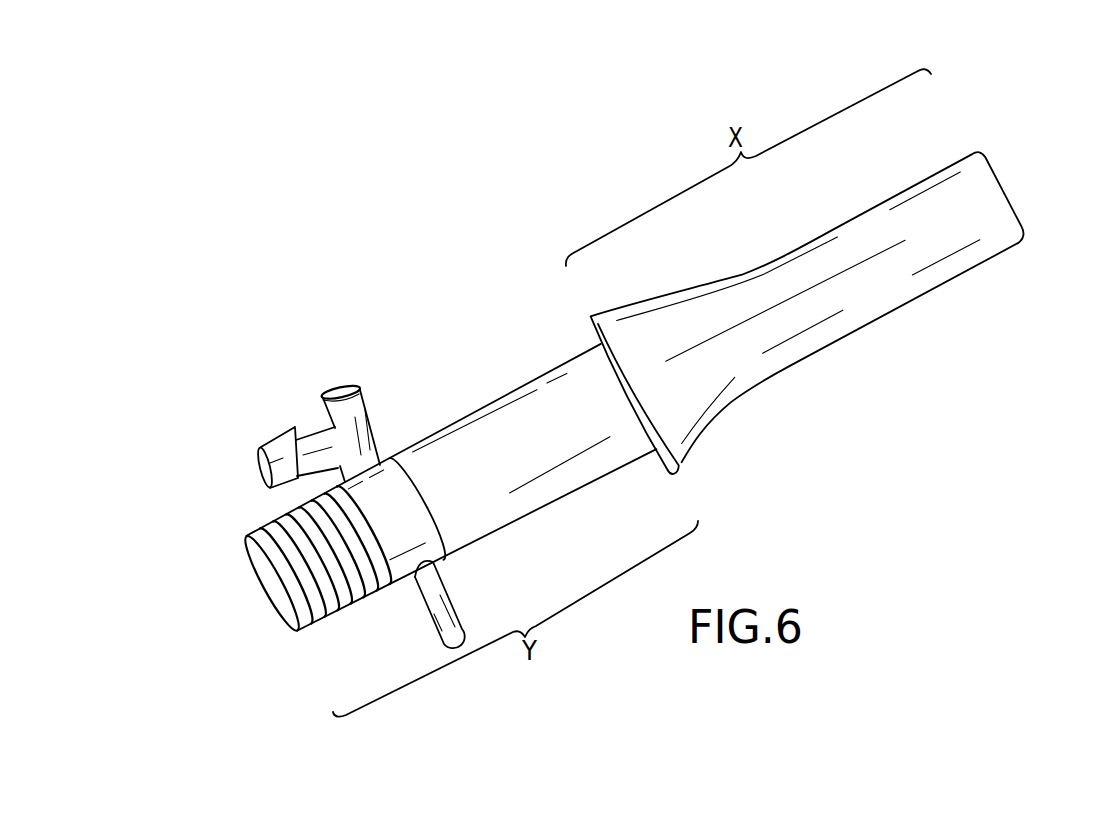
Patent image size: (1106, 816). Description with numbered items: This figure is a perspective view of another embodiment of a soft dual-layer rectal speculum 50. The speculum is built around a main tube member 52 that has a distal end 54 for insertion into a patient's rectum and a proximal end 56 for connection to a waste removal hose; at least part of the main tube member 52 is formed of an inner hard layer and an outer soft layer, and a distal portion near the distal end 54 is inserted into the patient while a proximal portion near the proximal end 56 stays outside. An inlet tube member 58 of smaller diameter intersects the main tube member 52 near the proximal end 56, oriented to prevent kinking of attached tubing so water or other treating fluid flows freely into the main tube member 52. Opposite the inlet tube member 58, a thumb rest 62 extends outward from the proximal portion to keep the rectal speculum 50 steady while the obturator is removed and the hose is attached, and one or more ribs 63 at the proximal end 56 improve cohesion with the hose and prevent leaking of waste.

The soft dual-layer rectal speculum 50 is at (887, 432).
The main tube member 52 is at (503, 394).
The distal end 54 is at (1024, 240).
The proximal end 56 is at (247, 541).
The inlet tube member 58 is at (336, 430).
The thumb rest 62 is at (459, 608).
The ribs 63 is at (356, 604).